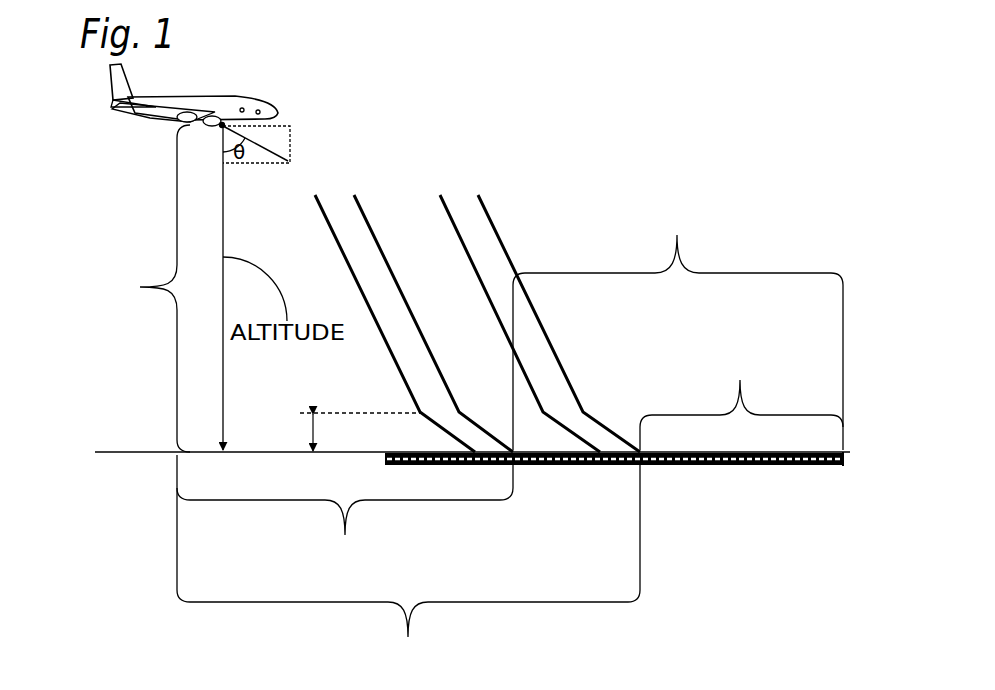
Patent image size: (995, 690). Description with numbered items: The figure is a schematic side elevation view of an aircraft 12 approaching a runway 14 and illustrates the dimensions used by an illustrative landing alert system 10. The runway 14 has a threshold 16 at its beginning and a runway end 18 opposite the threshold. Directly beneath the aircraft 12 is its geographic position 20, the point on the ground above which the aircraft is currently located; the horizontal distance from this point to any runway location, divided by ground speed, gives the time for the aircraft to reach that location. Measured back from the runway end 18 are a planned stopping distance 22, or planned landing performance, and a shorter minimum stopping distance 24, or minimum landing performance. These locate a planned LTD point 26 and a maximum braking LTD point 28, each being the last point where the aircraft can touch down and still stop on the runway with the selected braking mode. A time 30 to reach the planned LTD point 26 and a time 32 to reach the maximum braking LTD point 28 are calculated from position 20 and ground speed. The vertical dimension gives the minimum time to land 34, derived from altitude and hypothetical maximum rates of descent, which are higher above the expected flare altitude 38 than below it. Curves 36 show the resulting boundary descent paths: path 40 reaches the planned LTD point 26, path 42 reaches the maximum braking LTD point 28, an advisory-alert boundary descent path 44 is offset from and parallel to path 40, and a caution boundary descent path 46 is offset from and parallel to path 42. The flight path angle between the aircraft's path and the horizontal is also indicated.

The landing alert system 10 is at (730, 88).
The aircraft 12 is at (200, 97).
The runway 14 is at (757, 468).
The threshold 16 is at (400, 440).
The runway end 18 is at (842, 468).
The geographic position 20 is at (226, 460).
The planned stopping distance 22 is at (678, 212).
The minimum stopping distance 24 is at (741, 355).
The planned LTD point 26 is at (518, 470).
The maximum braking LTD point 28 is at (643, 468).
The time to reach planned LTD point 30 is at (394, 538).
The time to reach maximum braking LTD point 32 is at (408, 640).
The minimum time to land 34 is at (131, 288).
The curves 36 is at (425, 128).
The flare altitude 38 is at (311, 432).
The boundary descent path 40 is at (372, 232).
The boundary descent path 42 is at (492, 222).
The advisory-alert boundary descent path 44 is at (322, 210).
The caution boundary descent path 46 is at (445, 208).